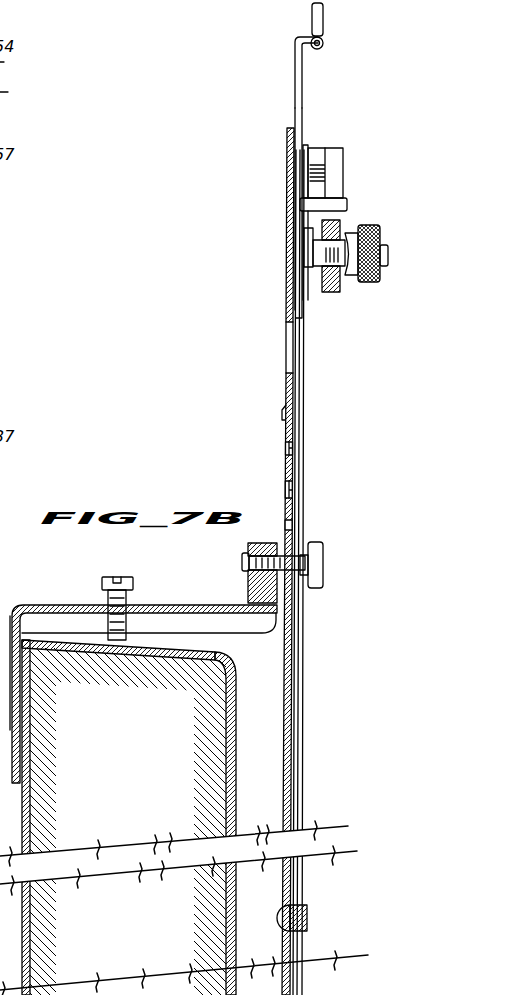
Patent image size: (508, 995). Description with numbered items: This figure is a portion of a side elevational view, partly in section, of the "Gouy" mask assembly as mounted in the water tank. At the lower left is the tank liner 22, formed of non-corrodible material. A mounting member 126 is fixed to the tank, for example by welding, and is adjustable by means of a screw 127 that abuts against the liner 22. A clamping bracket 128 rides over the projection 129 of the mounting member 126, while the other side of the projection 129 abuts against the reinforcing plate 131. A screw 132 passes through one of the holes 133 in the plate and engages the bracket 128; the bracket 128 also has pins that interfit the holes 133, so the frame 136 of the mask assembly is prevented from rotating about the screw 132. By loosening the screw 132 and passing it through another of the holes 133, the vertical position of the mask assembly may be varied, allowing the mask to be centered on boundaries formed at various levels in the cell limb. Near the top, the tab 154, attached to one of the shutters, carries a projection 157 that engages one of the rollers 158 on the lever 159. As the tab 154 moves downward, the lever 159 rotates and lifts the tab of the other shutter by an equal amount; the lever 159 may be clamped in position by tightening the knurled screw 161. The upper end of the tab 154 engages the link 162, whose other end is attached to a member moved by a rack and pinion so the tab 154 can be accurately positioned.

The liner 22 is at (229, 690).
The mounting member 126 is at (38, 604).
The screw 127 is at (117, 576).
The clamping bracket 128 is at (250, 548).
The projection 129 is at (250, 590).
The reinforcing plate 131 is at (284, 425).
The screw 132 is at (325, 561).
The holes 133 is at (292, 488).
The frame 136 is at (303, 692).
The tab 154 is at (298, 103).
The projection 157 is at (311, 148).
The rollers 158 is at (320, 168).
The lever 159 is at (331, 290).
The knurled screw 161 is at (376, 238).
The link 162 is at (325, 21).